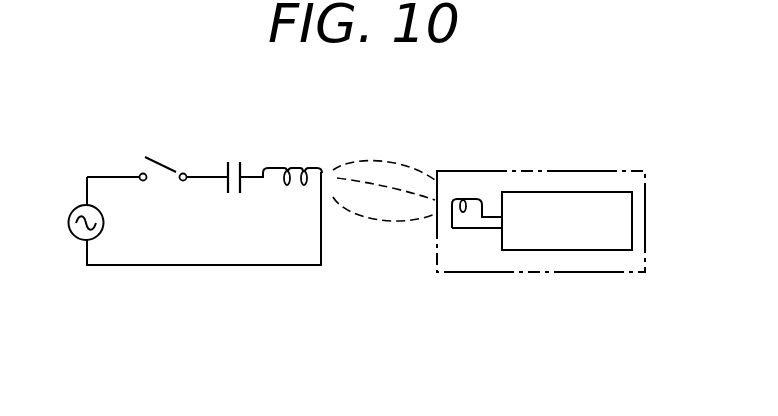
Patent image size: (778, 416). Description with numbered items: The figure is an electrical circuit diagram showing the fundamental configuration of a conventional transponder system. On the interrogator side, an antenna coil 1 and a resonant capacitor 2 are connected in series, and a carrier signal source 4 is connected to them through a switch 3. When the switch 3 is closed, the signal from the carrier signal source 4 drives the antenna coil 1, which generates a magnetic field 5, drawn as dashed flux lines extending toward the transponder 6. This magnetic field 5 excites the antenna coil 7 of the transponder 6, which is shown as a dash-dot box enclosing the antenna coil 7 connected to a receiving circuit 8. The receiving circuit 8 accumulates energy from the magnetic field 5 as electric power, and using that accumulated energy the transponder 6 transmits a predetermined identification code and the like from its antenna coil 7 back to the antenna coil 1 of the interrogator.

The antenna coil 1 is at (318, 167).
The resonant capacitor 2 is at (243, 162).
The switch 3 is at (173, 165).
The carrier signal source 4 is at (73, 207).
The magnetic field 5 is at (390, 158).
The transponder 6 is at (560, 263).
The antenna coil 7 is at (470, 198).
The receiving circuit 8 is at (577, 193).